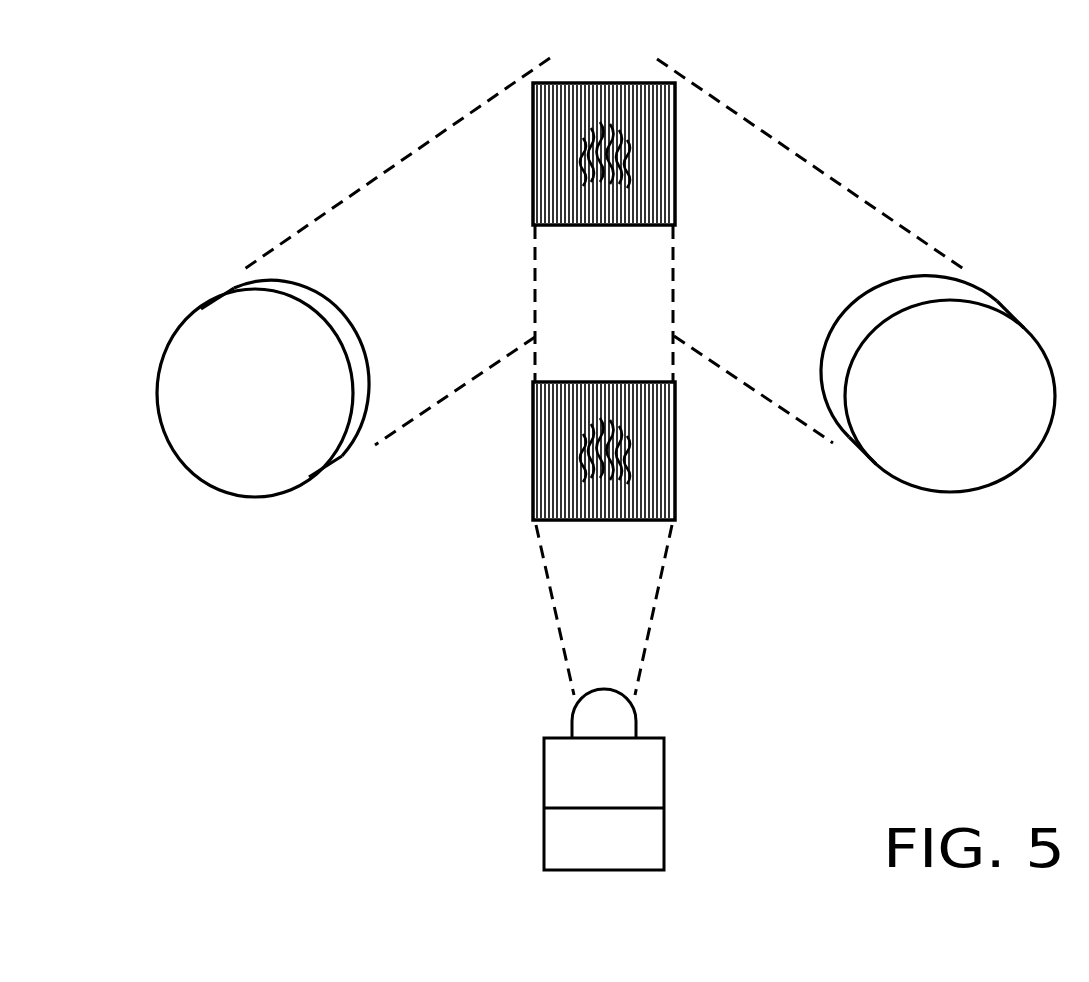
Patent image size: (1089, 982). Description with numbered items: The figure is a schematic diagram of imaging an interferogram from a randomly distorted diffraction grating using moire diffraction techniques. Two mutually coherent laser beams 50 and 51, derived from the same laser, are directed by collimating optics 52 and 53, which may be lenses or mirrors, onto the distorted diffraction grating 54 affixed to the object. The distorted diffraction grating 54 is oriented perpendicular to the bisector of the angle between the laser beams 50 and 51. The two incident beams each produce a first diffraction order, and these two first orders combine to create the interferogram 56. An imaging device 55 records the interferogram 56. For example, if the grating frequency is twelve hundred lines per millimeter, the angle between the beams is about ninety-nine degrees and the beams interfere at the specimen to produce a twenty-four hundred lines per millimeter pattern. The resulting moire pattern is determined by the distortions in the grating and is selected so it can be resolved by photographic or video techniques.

The laser beam 50 is at (435, 402).
The laser beam 51 is at (777, 408).
The collimating optics 52 is at (213, 480).
The collimating optics 53 is at (968, 488).
The distorted diffraction grating 54 is at (675, 153).
The imaging device 55 is at (640, 724).
The interferogram 56 is at (675, 497).